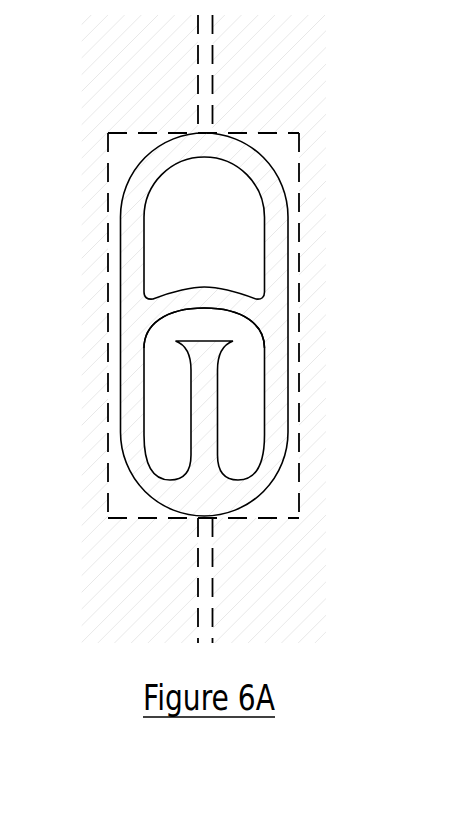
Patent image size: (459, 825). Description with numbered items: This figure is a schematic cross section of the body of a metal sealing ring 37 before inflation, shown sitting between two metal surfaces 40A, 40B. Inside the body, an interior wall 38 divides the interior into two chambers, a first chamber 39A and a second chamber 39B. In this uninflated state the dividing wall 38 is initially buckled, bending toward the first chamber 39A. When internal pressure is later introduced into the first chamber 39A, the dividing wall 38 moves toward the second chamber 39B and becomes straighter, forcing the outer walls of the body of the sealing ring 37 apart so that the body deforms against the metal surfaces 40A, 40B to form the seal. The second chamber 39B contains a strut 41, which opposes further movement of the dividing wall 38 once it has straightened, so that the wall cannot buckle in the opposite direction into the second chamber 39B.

The metal sealing ring 37 is at (109, 157).
The interior wall 38 is at (177, 301).
The first chamber 39A is at (165, 222).
The second chamber 39B is at (165, 383).
The metal surface 40A is at (108, 473).
The metal surface 40B is at (299, 490).
The strut 41 is at (213, 355).